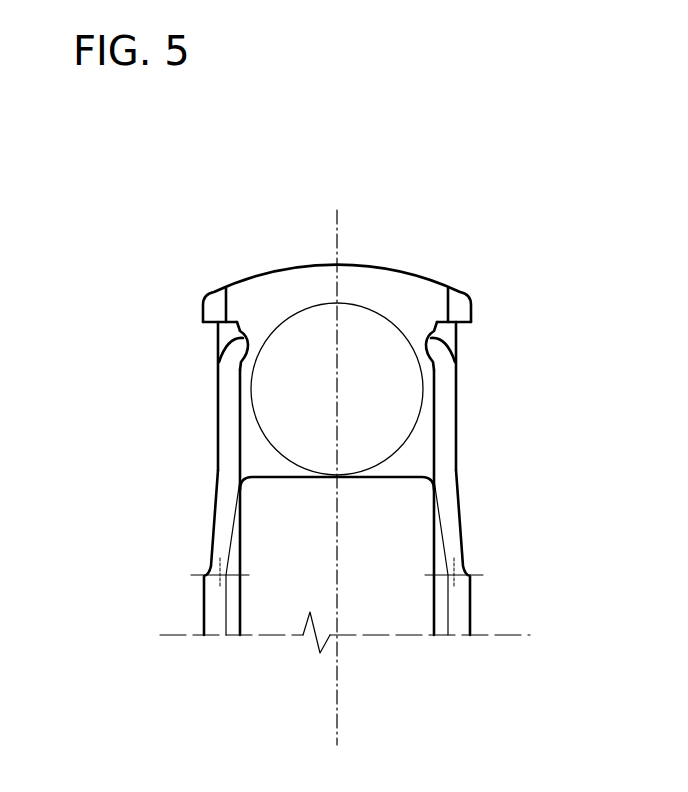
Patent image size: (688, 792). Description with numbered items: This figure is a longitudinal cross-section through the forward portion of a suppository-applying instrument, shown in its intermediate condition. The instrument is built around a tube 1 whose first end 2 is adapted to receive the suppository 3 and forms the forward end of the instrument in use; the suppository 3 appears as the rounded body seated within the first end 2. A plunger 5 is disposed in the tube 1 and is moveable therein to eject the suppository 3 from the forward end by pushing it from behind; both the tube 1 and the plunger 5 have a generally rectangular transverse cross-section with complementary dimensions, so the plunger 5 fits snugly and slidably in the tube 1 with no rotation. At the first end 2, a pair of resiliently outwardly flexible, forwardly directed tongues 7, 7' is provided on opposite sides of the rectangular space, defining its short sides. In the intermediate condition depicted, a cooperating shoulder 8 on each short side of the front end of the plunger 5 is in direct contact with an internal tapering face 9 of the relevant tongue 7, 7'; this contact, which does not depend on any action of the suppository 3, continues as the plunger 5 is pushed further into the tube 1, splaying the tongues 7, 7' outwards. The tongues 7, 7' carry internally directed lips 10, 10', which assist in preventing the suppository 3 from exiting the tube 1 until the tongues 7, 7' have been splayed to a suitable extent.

The tube 1 is at (112, 528).
The first end 2 is at (522, 323).
The suppository 3 is at (378, 397).
The plunger 5 is at (393, 618).
The tongue 7 is at (521, 396).
The tongue 7' is at (175, 396).
The cooperating shoulder 8 is at (241, 470).
The internal tapering face 9 is at (228, 534).
The internally directed lip 10 is at (414, 281).
The internally directed lip 10' is at (259, 267).